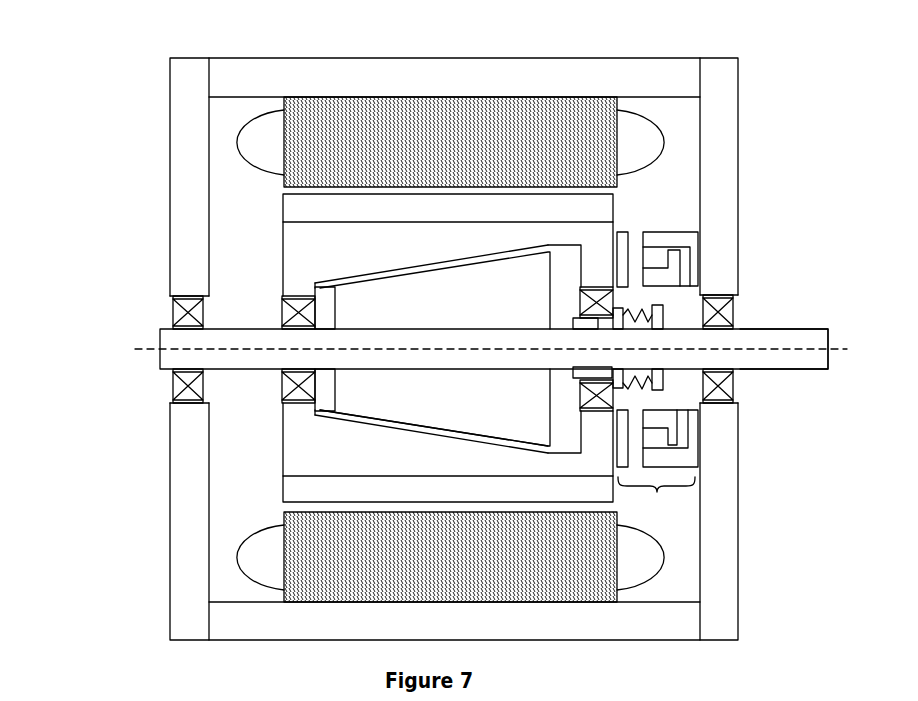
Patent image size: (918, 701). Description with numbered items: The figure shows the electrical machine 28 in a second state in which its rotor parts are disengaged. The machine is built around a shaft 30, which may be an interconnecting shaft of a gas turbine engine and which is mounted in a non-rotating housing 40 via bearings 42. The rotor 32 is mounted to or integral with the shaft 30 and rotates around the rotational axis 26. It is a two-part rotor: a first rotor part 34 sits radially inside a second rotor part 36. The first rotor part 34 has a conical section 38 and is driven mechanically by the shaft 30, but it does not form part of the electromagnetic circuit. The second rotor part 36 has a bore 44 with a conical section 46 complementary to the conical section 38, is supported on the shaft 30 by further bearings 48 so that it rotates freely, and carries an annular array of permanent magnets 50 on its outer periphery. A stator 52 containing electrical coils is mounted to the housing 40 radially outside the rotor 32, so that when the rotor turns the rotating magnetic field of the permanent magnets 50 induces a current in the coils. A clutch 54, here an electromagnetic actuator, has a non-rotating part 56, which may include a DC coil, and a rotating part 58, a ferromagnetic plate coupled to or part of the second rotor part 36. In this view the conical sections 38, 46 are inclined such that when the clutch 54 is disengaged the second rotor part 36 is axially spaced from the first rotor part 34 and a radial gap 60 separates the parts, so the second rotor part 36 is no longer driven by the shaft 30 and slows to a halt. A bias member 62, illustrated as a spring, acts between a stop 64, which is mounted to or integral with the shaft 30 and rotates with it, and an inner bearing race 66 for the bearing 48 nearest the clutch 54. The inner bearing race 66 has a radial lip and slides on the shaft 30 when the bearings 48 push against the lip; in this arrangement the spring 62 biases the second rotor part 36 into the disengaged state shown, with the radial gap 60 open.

The electrical machine 28 is at (93, 96).
The rotational axis 26 is at (762, 348).
The shaft 30 is at (170, 355).
The rotor 32 is at (272, 193).
The first rotor part 34 is at (404, 320).
The second rotor part 36 is at (363, 258).
The conical section 38 is at (495, 276).
The housing 40 is at (170, 172).
The bearings 42 is at (173, 312).
The bore 44 is at (575, 258).
The conical section 46 is at (396, 266).
The further bearings 48 is at (280, 383).
The permanent magnets 50 is at (372, 205).
The stator 52 is at (390, 117).
The clutch 54 is at (656, 500).
The non-rotating part 56 is at (712, 268).
The rotating part 58 is at (622, 232).
The radial gap 60 is at (395, 414).
The bias member 62 is at (628, 375).
The stop 64 is at (663, 308).
The inner bearing race 66 is at (598, 321).